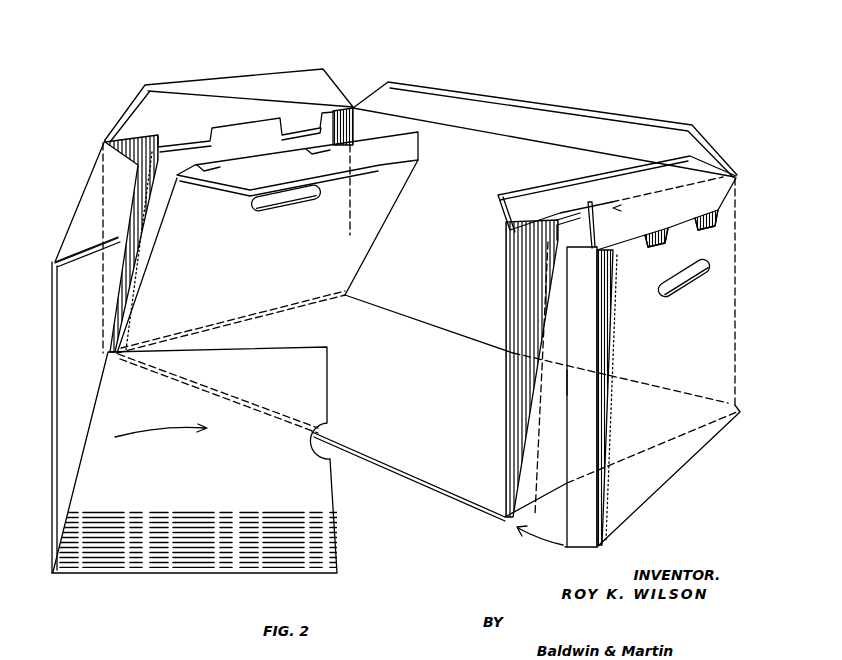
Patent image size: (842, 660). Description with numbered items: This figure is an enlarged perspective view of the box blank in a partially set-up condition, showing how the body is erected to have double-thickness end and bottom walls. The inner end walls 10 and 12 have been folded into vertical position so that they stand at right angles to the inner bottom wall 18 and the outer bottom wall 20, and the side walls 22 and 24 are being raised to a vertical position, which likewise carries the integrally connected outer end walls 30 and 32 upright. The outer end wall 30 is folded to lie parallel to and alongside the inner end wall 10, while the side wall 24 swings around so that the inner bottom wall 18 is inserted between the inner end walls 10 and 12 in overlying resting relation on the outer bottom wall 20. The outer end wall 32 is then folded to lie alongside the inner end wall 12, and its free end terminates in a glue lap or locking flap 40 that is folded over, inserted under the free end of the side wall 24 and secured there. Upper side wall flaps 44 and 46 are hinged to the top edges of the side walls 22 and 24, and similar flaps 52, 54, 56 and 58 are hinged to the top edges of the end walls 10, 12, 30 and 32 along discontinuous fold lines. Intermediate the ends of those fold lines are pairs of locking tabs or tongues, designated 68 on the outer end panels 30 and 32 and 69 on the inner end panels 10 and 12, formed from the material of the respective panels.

The inner end wall 10 is at (268, 259).
The inner end wall 12 is at (540, 427).
The inner bottom wall 18 is at (198, 469).
The outer bottom wall 20 is at (384, 381).
The side wall 22 is at (431, 240).
The side wall 24 is at (52, 351).
The outer end wall 30 is at (241, 145).
The outer end wall 32 is at (659, 344).
The glue lap or locking flap 40 is at (567, 382).
The upper side wall flap 44 is at (550, 103).
The upper side wall flap 46 is at (90, 255).
The end wall flap 52 is at (232, 190).
The end wall flap 54 is at (555, 188).
The end wall flap 56 is at (267, 72).
The end wall flap 58 is at (622, 203).
The locking tabs 68 is at (178, 140).
The locking tabs 69 is at (233, 158).